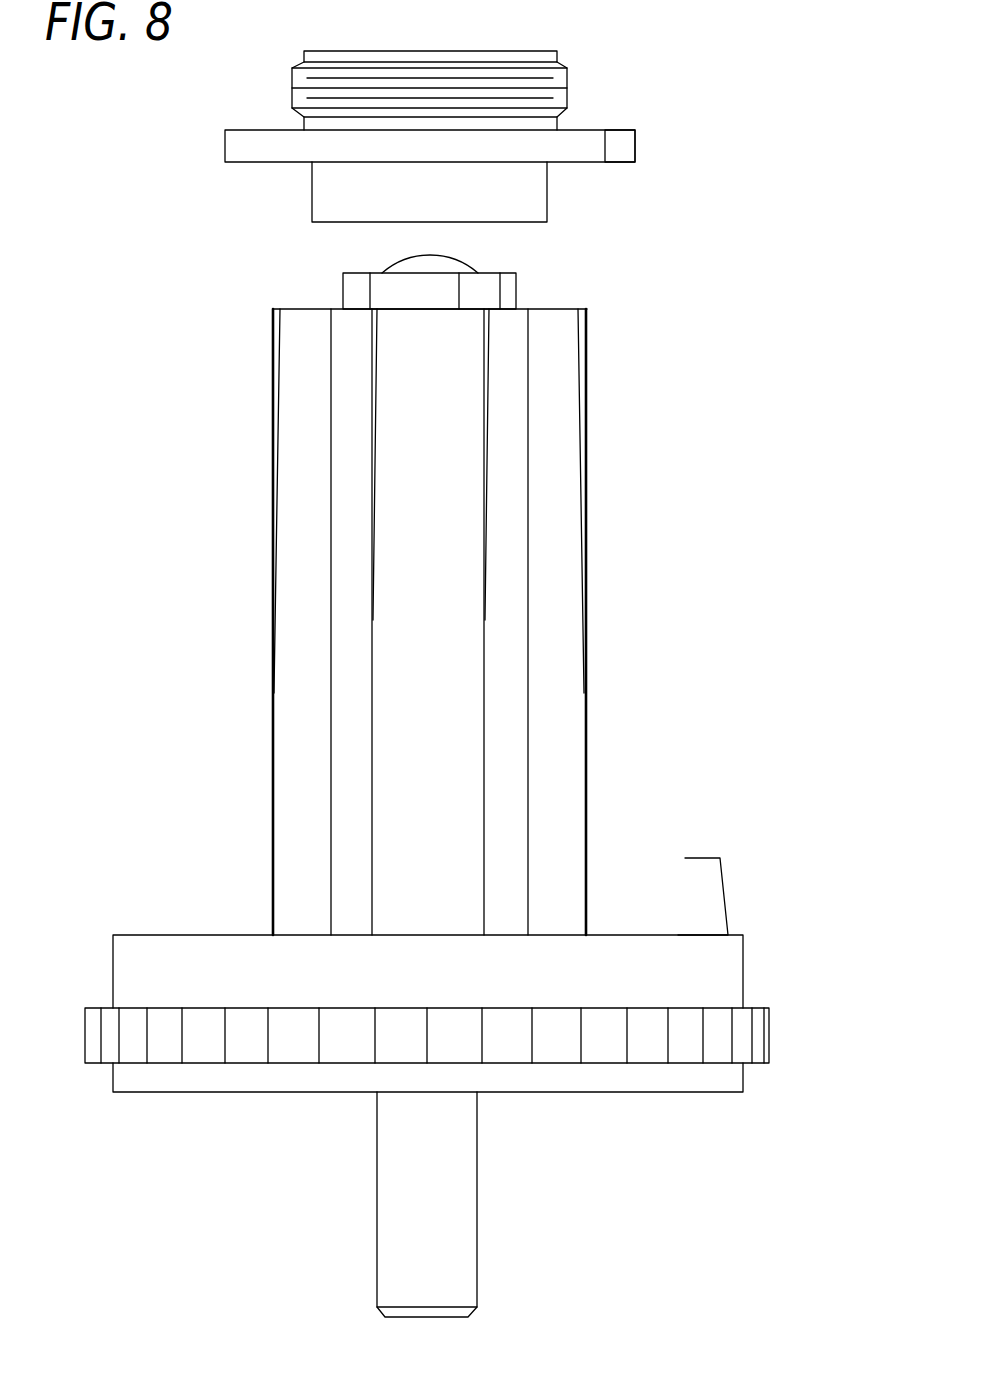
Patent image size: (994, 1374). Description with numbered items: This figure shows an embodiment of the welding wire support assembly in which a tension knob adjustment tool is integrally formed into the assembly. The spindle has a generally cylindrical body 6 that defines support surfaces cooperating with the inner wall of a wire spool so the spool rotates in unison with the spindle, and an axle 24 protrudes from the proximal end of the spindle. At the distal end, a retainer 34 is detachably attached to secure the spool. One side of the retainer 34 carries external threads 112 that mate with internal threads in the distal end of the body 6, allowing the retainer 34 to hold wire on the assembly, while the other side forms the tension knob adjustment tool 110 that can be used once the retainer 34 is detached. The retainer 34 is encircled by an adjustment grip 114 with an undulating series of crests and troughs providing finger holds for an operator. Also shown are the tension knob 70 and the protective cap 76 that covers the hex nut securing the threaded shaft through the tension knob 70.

The external threads 112 is at (547, 51).
The retainer 34 is at (254, 130).
The adjustment grip 114 is at (583, 145).
The tension knob adjustment tool 110 is at (495, 195).
The protective cap 76 is at (428, 267).
The tension knob 70 is at (487, 293).
The body 6 is at (553, 438).
The axle 24 is at (430, 1234).